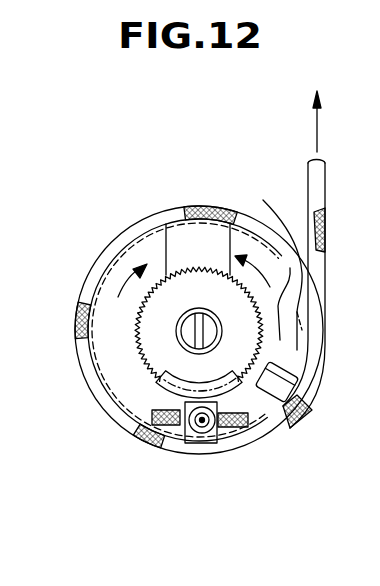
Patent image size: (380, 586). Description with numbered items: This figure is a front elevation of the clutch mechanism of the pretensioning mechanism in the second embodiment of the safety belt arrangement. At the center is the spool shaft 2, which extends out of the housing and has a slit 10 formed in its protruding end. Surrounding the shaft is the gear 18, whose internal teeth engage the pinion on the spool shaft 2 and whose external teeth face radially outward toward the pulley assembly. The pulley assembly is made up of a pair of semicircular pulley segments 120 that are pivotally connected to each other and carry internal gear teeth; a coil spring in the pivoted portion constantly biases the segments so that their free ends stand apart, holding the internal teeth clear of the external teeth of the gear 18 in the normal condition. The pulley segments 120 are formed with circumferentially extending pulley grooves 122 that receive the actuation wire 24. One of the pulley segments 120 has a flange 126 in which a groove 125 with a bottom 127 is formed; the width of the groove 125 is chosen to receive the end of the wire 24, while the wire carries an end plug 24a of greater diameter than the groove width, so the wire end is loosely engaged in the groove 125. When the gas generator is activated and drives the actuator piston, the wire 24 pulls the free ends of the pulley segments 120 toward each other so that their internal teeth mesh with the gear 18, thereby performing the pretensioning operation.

The spool shaft 2 is at (177, 330).
The slit 10 is at (188, 341).
The gear 18 is at (158, 358).
The actuation wire 24 is at (318, 198).
The end plug 24a is at (283, 417).
The pulley segments 120 is at (80, 358).
The pulley grooves 122 is at (115, 257).
The groove 125 is at (317, 292).
The flange 126 is at (338, 298).
The bottom 127 is at (243, 445).